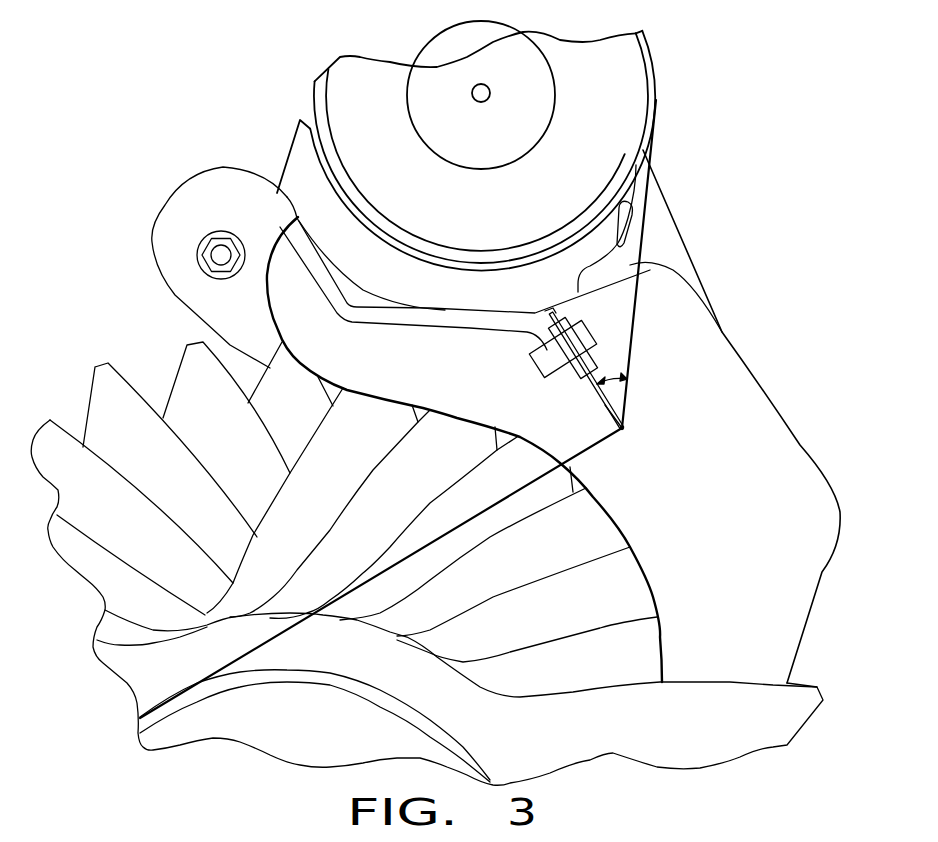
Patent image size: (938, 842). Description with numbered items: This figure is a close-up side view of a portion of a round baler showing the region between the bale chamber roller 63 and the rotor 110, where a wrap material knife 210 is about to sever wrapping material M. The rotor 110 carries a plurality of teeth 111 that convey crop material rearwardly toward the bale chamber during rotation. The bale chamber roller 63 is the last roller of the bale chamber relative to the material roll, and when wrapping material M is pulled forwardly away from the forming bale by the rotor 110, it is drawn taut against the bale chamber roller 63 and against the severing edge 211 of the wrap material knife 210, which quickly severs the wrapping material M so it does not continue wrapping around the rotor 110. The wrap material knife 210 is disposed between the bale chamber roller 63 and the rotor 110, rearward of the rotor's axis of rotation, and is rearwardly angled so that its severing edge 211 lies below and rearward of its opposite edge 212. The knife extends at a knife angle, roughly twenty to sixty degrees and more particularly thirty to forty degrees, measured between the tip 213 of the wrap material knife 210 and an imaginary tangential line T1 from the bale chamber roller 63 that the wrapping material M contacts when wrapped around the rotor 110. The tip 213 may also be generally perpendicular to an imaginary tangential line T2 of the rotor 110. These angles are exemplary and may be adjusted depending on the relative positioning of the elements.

The bale chamber roller 63 is at (620, 65).
The imaginary tangential line T1 is at (652, 148).
The wrapping material M is at (640, 242).
The opposite edge 212 is at (550, 313).
The wrap material knife 210 is at (603, 372).
The severing edge 211 is at (618, 429).
The tip 213 is at (623, 432).
The imaginary tangential line T2 is at (374, 574).
The rotor 110 is at (280, 720).
The teeth 111 is at (592, 614).